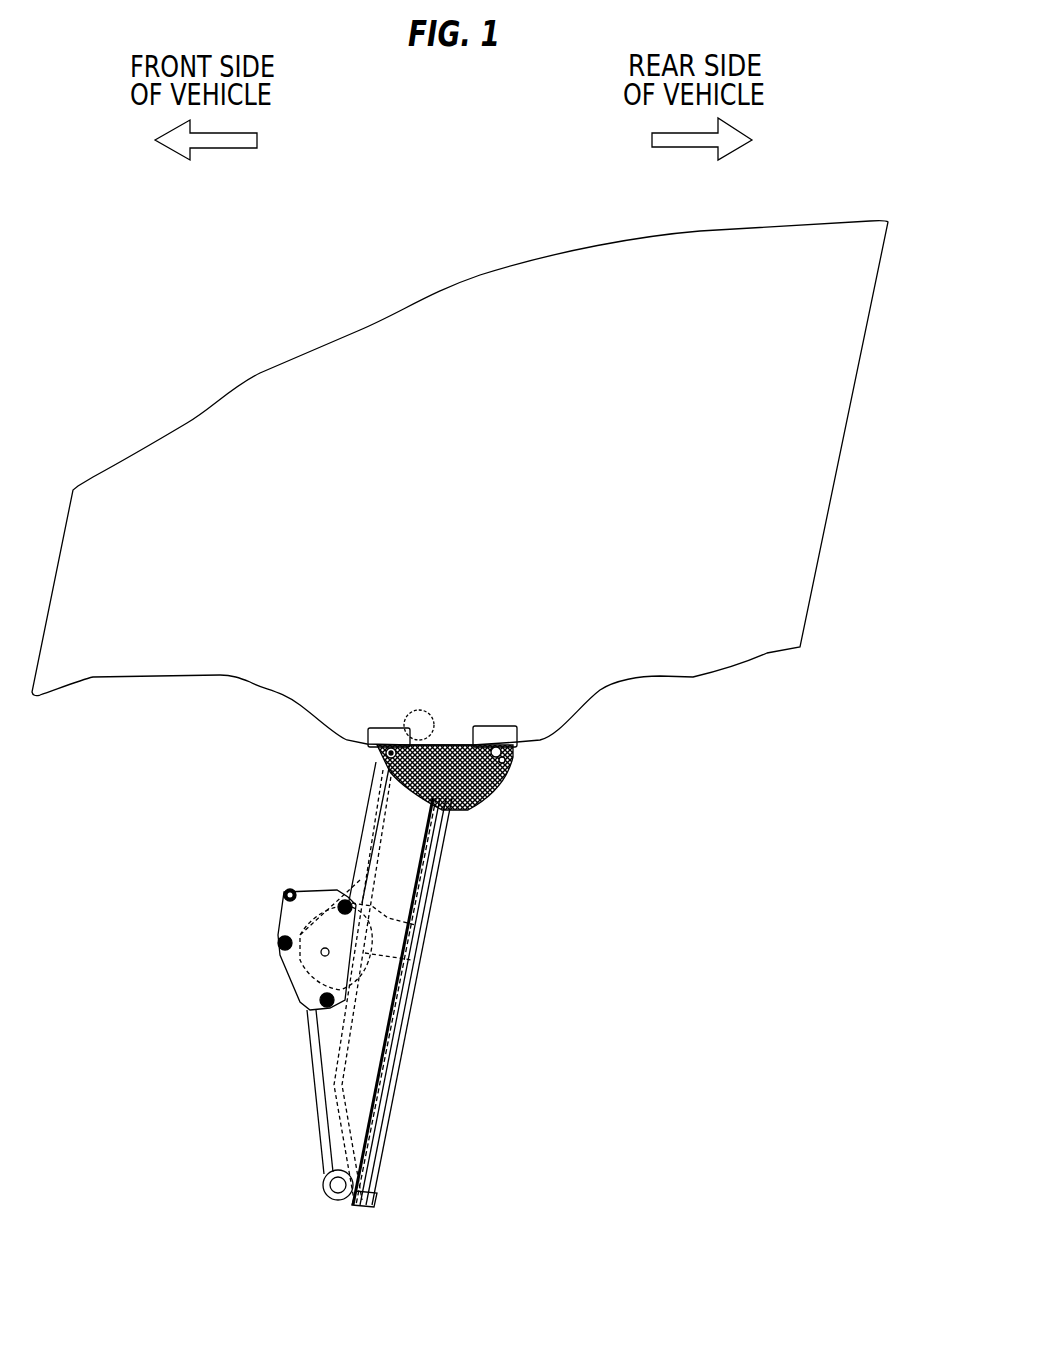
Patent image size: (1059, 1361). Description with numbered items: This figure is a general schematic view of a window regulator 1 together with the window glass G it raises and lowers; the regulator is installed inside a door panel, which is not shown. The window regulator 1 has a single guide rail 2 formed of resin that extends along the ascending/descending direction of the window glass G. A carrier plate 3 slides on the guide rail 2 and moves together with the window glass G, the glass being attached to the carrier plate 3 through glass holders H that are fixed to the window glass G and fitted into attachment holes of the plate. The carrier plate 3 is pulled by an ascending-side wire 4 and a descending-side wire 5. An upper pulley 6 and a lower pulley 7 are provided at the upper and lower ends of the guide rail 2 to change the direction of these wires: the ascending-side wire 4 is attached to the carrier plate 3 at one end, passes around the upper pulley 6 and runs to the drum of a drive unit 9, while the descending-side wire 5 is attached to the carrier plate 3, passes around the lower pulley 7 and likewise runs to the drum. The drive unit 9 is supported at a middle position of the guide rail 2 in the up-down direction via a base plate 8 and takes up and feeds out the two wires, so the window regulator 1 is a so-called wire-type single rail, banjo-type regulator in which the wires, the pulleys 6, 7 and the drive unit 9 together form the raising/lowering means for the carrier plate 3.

The window regulator 1 is at (483, 913).
The guide rail 2 is at (392, 1085).
The carrier plate 3 is at (493, 787).
The ascending-side wire 4 is at (352, 847).
The descending-side wire 5 is at (390, 1030).
The upper pulley 6 is at (414, 712).
The lower pulley 7 is at (325, 1196).
The base plate 8 is at (293, 920).
The drive unit 9 is at (297, 960).
The window glass G is at (192, 437).
The glass holder H is at (360, 742).